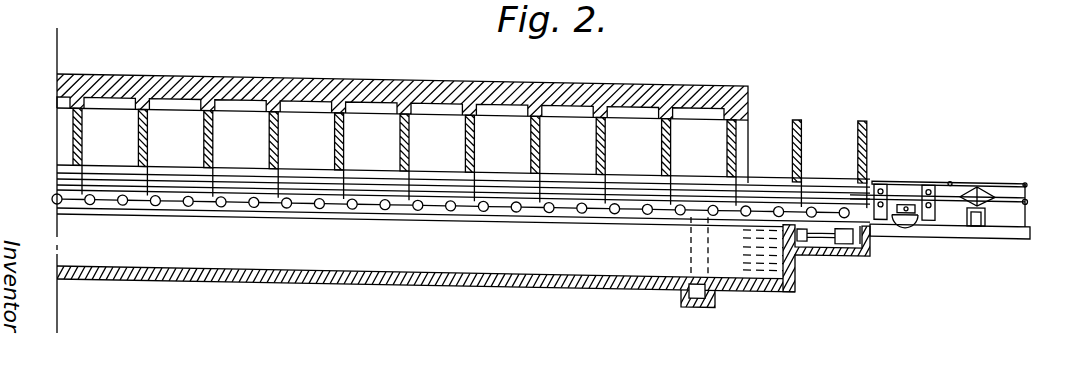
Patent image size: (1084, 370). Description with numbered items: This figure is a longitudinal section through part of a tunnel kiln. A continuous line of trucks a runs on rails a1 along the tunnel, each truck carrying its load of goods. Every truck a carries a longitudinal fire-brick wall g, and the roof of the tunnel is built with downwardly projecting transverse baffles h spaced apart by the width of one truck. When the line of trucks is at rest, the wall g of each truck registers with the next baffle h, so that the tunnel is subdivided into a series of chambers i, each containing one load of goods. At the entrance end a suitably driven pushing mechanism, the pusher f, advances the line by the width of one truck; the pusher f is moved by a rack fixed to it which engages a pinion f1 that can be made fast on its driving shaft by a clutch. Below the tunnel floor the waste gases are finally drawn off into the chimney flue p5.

The truck a is at (498, 192).
The rail a1 is at (627, 203).
The longitudinal fire-brick wall g is at (857, 136).
The transverse baffle h is at (670, 108).
The chamber i is at (402, 138).
The chimney flue p5 is at (698, 280).
The pusher f is at (1010, 178).
The pinion f1 is at (910, 212).